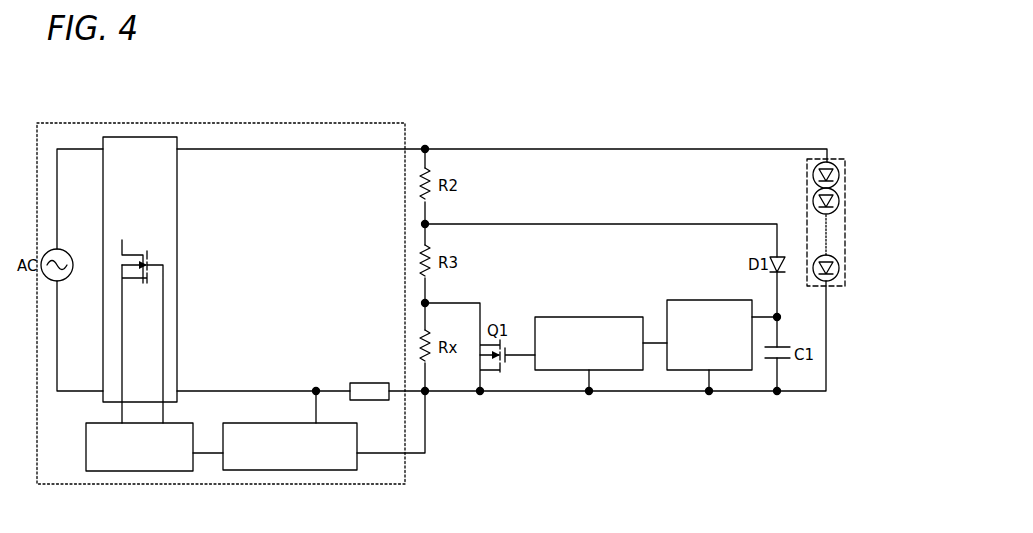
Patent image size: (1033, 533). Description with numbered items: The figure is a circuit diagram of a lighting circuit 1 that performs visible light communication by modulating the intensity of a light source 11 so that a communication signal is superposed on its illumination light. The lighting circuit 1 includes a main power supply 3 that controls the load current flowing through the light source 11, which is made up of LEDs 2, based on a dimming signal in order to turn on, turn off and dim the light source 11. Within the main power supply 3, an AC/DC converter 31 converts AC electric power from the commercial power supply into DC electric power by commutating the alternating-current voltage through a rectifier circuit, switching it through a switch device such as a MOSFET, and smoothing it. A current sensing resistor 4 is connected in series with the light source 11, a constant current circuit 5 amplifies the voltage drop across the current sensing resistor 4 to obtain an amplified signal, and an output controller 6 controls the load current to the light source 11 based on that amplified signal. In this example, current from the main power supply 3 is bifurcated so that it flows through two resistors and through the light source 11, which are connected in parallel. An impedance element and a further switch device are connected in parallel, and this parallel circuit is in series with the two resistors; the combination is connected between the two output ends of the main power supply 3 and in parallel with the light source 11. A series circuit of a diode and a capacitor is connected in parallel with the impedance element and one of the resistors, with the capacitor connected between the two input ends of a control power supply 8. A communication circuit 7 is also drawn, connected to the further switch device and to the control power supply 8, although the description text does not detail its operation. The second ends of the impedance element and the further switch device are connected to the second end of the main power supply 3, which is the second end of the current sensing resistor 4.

The lighting circuit 1 is at (49, 113).
The LEDs 2 is at (839, 175).
The main power supply 3 is at (362, 123).
The AC/DC converter 31 is at (177, 186).
The current sensing resistor 4 is at (370, 383).
The constant current circuit 5 is at (288, 470).
The output controller 6 is at (150, 471).
The communication circuit 7 is at (597, 317).
The control power supply 8 is at (710, 300).
The light source 11 is at (838, 158).